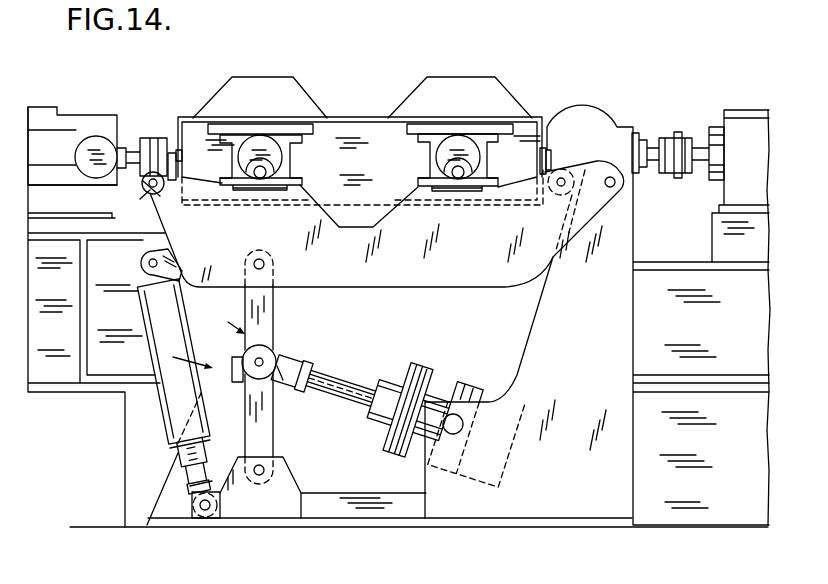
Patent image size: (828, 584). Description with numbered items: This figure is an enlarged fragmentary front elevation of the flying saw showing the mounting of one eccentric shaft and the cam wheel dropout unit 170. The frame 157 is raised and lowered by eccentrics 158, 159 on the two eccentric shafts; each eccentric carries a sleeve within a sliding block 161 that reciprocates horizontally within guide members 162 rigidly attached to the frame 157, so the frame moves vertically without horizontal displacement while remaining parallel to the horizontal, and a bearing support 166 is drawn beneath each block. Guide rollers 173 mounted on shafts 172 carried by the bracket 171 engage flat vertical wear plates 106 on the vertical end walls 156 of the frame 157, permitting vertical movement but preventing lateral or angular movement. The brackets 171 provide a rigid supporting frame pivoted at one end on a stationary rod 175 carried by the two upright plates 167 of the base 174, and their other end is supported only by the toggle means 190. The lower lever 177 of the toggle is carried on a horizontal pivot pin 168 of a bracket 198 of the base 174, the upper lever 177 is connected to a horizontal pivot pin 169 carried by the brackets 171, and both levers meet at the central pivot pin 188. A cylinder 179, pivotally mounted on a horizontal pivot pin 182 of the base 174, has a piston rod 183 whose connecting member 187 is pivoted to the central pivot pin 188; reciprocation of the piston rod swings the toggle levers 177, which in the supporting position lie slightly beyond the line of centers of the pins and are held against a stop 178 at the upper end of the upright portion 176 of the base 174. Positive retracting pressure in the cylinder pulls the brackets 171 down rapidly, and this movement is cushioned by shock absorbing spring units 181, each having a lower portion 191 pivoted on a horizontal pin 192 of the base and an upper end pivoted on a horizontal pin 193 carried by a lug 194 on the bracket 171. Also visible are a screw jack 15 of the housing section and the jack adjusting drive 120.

The screw jack 15 is at (68, 118).
The wear plate 106 is at (178, 164).
The jack adjusting drive 120 is at (741, 112).
The vertical end wall 156 is at (174, 151).
The frame 157 is at (187, 116).
The eccentric 158 is at (268, 150).
The eccentric 159 is at (465, 150).
The sliding block 161 is at (292, 181).
The guide member 162 is at (247, 124).
The bearing support 166 is at (262, 190).
The upright plate 167 is at (536, 348).
The horizontal pivot pin 168 is at (258, 476).
The horizontal pivot pin 169 is at (254, 265).
The cam wheel dropout unit 170 is at (219, 319).
The bracket 171 is at (453, 283).
The shaft 172 is at (152, 194).
The guide roller 173 is at (143, 187).
The base 174 is at (695, 336).
The rod 175 is at (616, 186).
The upright portion 176 is at (178, 456).
The toggle lever 177 is at (273, 311).
The stop 178 is at (241, 358).
The cylinder 179 is at (477, 446).
The shock absorbing spring unit 181 is at (152, 318).
The horizontal pivot pin 182 is at (452, 413).
The piston rod 183 is at (350, 383).
The connecting member 187 is at (281, 370).
The central pivot pin 188 is at (270, 357).
The toggle means 190 is at (185, 352).
The lower portion 191 is at (195, 487).
The horizontal pin 192 is at (200, 505).
The horizontal pin 193 is at (148, 262).
The lug 194 is at (170, 254).
The bracket 198 is at (290, 481).